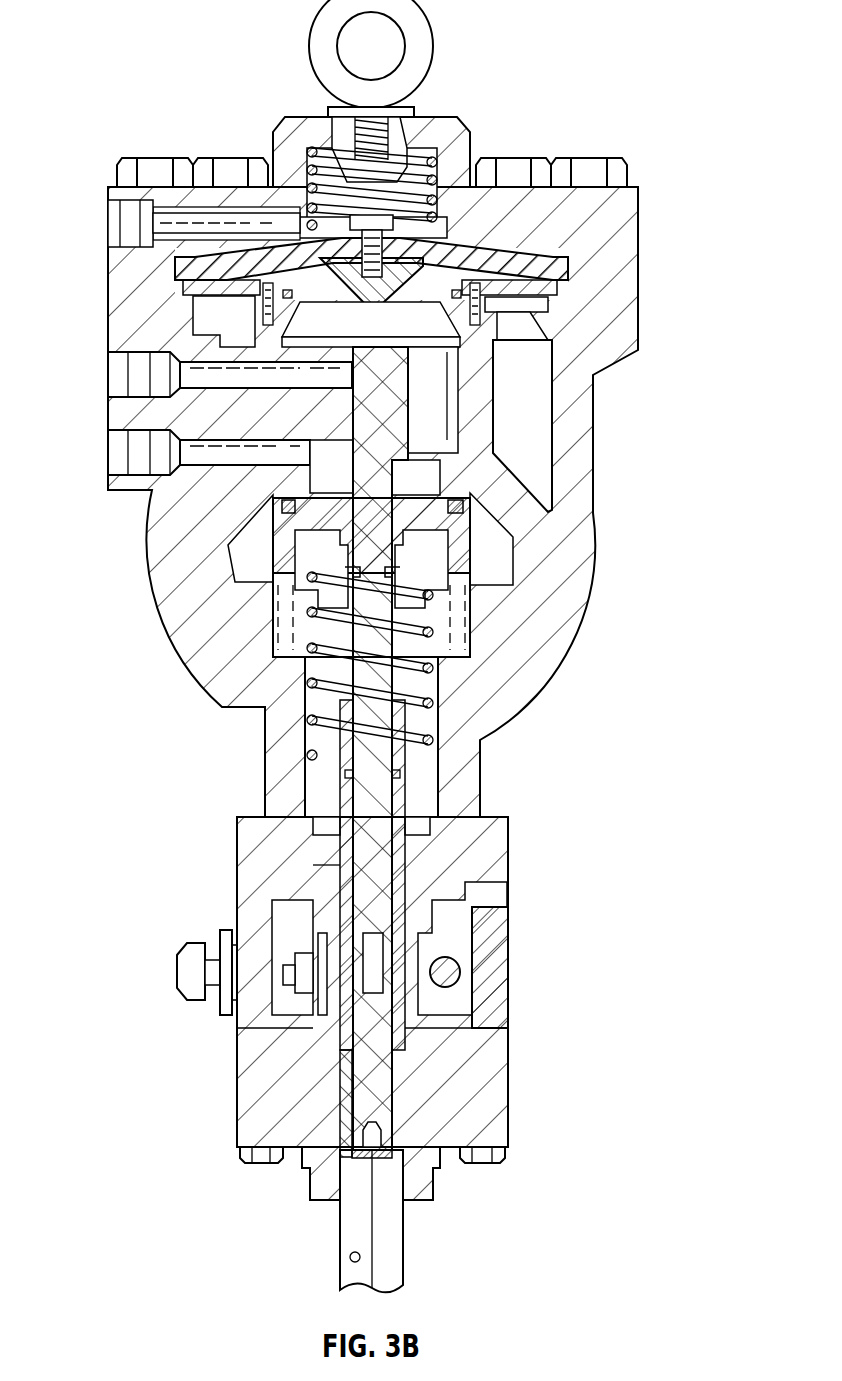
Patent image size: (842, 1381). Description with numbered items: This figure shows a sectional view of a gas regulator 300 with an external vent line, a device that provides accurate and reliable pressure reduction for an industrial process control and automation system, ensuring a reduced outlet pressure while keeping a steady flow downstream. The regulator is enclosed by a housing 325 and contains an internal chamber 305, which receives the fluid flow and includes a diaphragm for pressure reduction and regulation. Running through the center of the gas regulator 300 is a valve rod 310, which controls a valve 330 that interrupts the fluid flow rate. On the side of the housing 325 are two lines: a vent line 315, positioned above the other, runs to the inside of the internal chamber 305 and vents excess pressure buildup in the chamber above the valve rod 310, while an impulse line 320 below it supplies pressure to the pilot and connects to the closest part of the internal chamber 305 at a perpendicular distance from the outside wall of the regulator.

The gas regulator 300 is at (163, 28).
The internal chamber 305 is at (537, 373).
The valve rod 310 is at (367, 842).
The vent line 315 is at (113, 376).
The impulse line 320 is at (113, 456).
The housing 325 is at (582, 443).
The valve 330 is at (243, 537).